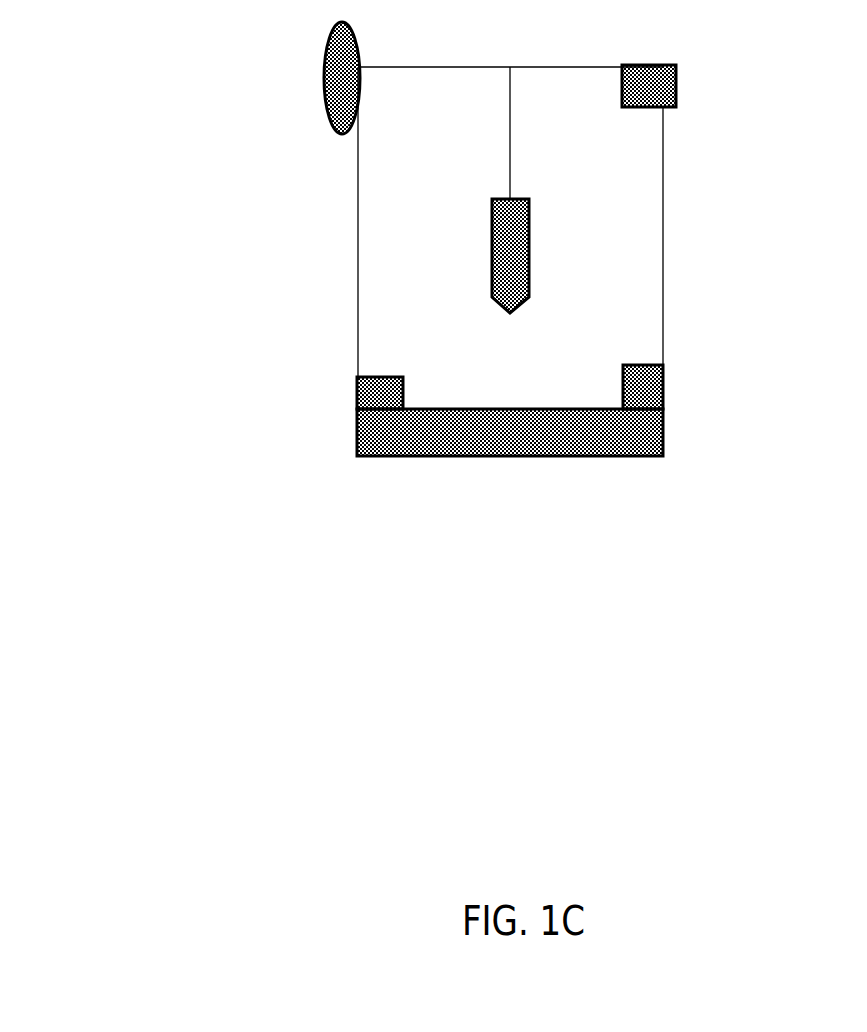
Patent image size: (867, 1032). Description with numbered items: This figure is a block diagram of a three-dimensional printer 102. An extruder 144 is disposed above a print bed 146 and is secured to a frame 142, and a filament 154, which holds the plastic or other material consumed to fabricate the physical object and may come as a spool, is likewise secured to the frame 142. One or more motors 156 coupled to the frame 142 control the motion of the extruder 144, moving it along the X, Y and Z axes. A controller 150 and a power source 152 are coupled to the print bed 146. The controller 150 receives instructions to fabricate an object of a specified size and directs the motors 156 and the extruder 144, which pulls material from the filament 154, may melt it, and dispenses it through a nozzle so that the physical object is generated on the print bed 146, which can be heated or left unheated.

The 3-D printer 102 is at (257, 135).
The frame 142 is at (663, 133).
The extruder 144 is at (529, 247).
The print bed 146 is at (530, 410).
The controller 150 is at (357, 394).
The power source 152 is at (645, 395).
The filament 154 is at (326, 48).
The one or more motors 156 is at (677, 77).